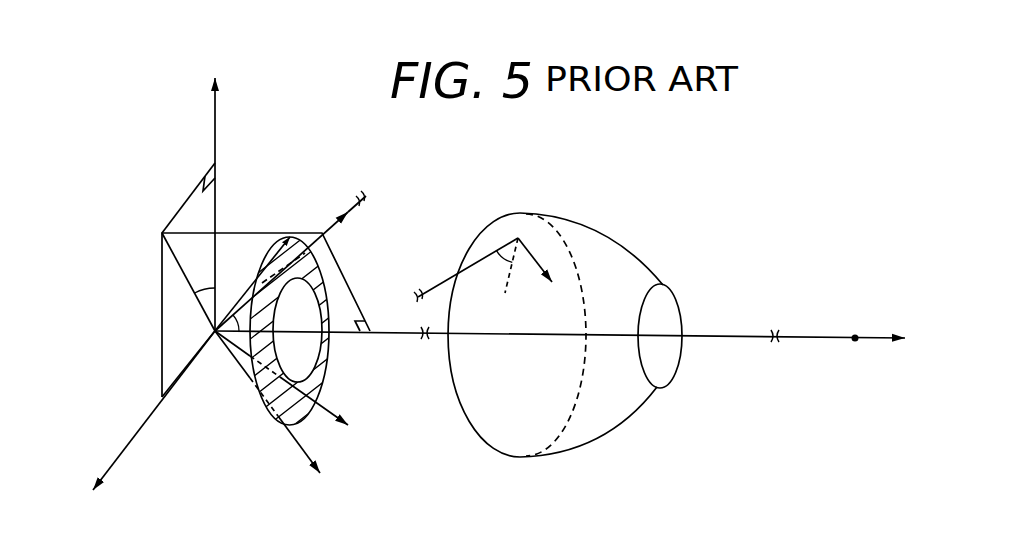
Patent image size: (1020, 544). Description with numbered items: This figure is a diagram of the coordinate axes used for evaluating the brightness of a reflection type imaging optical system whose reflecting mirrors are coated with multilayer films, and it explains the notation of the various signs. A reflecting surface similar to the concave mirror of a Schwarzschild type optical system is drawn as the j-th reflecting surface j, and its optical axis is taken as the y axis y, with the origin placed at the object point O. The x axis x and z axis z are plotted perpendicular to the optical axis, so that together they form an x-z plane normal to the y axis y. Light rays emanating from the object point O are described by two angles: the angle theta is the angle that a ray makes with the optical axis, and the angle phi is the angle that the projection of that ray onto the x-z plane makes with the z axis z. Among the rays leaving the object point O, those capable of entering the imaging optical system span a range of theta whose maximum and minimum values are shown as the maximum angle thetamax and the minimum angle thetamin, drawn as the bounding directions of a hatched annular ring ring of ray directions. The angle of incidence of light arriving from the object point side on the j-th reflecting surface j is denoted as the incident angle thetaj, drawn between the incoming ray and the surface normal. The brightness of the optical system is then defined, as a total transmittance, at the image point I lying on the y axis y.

The j-th reflecting surface j is at (602, 232).
The image point I is at (855, 360).
The incident angle on j-th reflecting surface thetaj is at (483, 270).
The minimum angle thetamin is at (315, 389).
The maximum angle thetamax is at (301, 418).
The angle theta is at (290, 261).
The angle phi is at (188, 282).
The x axis x is at (146, 424).
The y axis y is at (569, 341).
The z axis z is at (213, 191).
The object point O is at (211, 362).
The annular emission zone ring is at (290, 338).